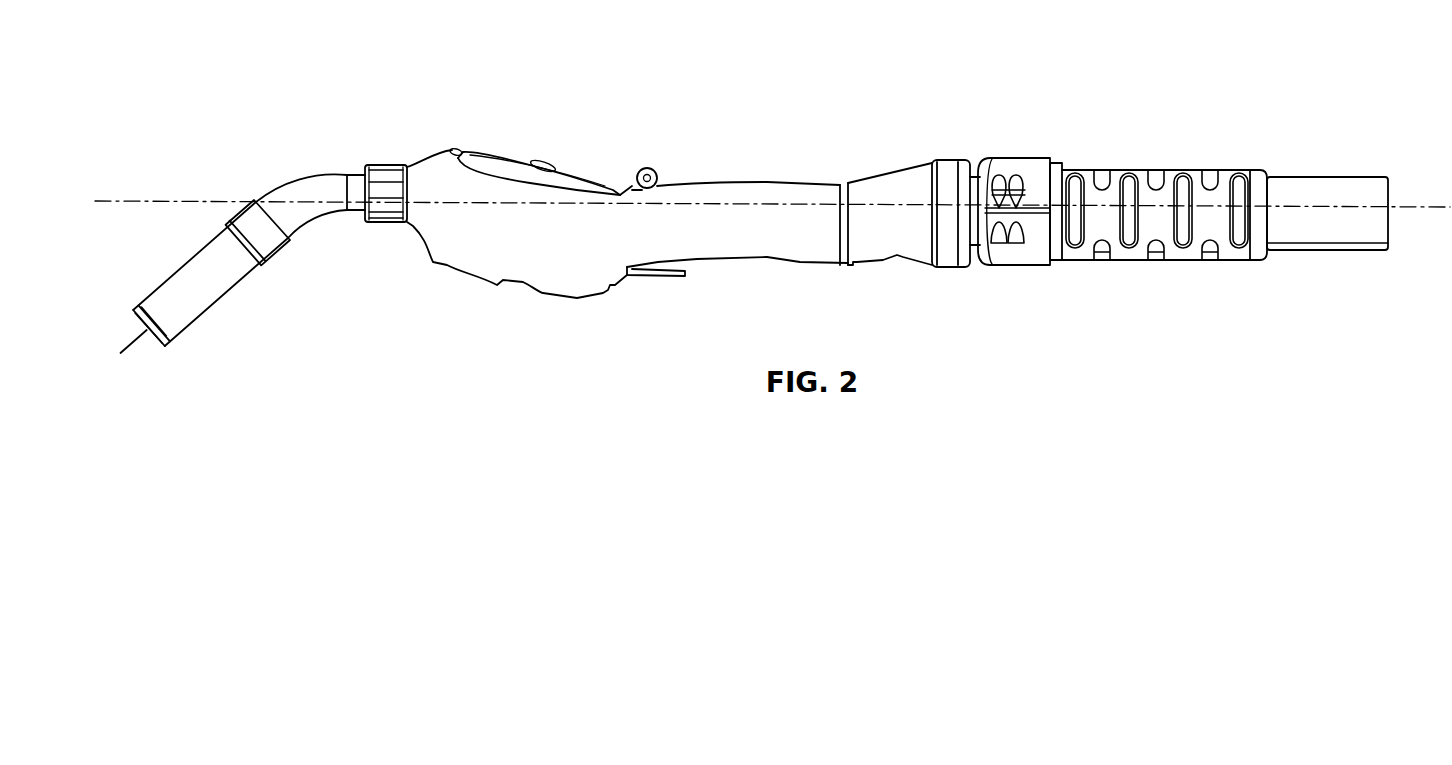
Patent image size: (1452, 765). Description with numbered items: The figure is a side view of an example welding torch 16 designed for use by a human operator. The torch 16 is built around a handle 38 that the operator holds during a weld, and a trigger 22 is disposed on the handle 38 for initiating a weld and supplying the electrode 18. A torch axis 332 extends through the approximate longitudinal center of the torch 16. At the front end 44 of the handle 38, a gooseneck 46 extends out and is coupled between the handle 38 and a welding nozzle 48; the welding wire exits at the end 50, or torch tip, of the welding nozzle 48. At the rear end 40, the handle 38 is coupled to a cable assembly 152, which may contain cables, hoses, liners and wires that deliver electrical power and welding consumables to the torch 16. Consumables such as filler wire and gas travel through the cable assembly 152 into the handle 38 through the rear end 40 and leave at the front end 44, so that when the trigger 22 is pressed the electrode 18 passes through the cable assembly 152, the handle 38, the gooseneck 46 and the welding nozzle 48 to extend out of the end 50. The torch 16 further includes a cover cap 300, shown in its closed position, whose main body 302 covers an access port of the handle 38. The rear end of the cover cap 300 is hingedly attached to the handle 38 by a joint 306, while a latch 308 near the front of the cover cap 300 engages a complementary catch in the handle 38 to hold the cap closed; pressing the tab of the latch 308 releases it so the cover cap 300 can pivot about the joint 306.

The welding torch 16 is at (312, 100).
The torch axis 332 is at (145, 202).
The front end 44 is at (402, 152).
The latch 308 is at (455, 148).
The cover cap 300 is at (512, 145).
The main body 302 is at (570, 172).
The joint 306 is at (646, 158).
The handle 38 is at (775, 190).
The rear end 40 is at (960, 150).
The cable assembly 152 is at (1285, 188).
The end 50 is at (112, 322).
The gooseneck 46 is at (307, 210).
The welding nozzle 48 is at (218, 277).
The trigger 22 is at (637, 277).
The electrode 18 is at (133, 337).